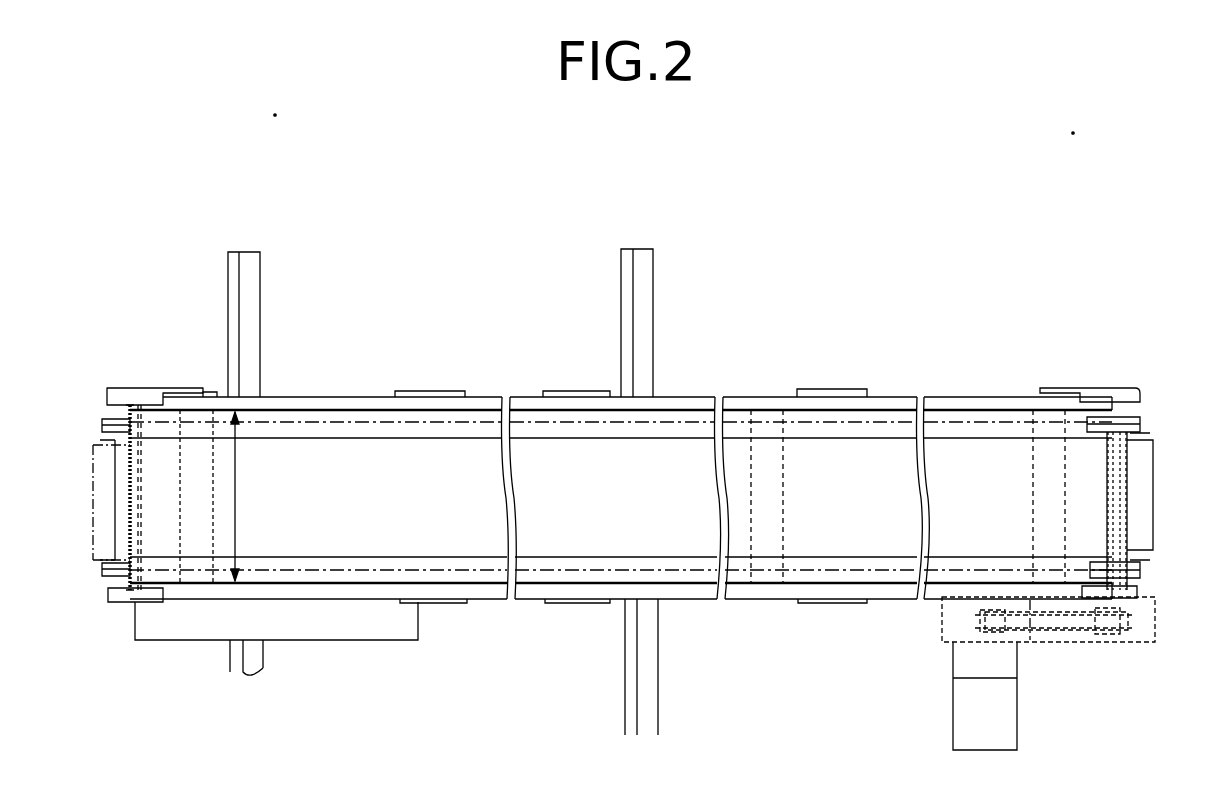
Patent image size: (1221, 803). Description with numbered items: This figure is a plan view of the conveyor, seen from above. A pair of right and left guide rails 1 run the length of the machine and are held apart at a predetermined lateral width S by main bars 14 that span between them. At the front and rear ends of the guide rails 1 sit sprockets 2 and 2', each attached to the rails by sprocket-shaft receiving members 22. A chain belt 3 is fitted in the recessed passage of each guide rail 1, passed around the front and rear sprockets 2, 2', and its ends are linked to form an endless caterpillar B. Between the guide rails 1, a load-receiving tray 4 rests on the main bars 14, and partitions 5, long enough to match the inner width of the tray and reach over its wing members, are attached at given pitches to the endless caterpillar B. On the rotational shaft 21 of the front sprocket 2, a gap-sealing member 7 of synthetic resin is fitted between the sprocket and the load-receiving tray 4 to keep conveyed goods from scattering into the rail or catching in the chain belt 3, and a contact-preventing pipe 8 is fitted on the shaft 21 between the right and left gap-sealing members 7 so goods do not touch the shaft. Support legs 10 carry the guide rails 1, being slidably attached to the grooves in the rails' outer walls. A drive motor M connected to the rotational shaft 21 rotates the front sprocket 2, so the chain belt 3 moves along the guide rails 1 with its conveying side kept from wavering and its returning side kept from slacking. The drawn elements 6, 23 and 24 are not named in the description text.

The guide rail 1 is at (370, 397).
The sprocket 2 is at (1143, 450).
The sprocket 2' is at (90, 471).
The chain belt 3 is at (285, 436).
The load-receiving tray 4 is at (676, 440).
The partition 5 is at (1150, 445).
The drive roller 6 is at (82, 457).
The gap-sealing member 7 is at (1140, 431).
The contact-preventing pipe 8 is at (1120, 535).
The support leg 10 is at (230, 380).
The main bar 14 is at (180, 420).
The rotational shaft 21 is at (1118, 500).
The sprocket-shaft receiving member 22 is at (122, 396).
The chain drive 23 is at (1092, 640).
The gear box 24 is at (950, 621).
The endless caterpillar B is at (333, 420).
The drive motor M is at (965, 715).
The lateral width S is at (236, 496).